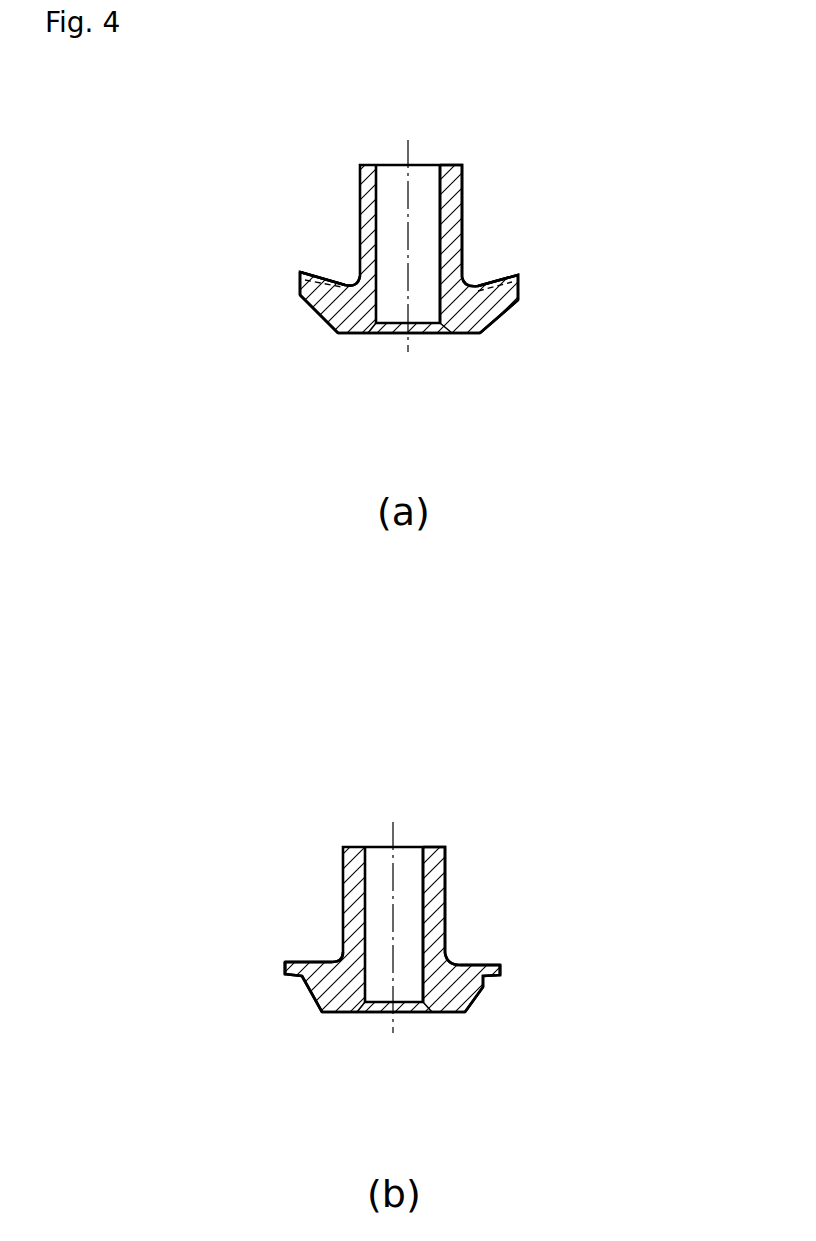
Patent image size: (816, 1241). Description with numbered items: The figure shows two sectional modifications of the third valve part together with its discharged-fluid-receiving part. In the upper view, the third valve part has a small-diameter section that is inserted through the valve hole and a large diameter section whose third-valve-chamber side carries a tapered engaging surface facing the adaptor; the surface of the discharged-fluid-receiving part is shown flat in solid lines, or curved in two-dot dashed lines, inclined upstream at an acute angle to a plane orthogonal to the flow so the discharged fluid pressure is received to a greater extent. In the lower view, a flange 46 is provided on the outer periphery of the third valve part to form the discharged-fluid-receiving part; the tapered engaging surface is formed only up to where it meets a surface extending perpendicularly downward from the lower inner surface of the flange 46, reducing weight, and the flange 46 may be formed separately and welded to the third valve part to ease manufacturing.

The flange 46 is at (285, 970).